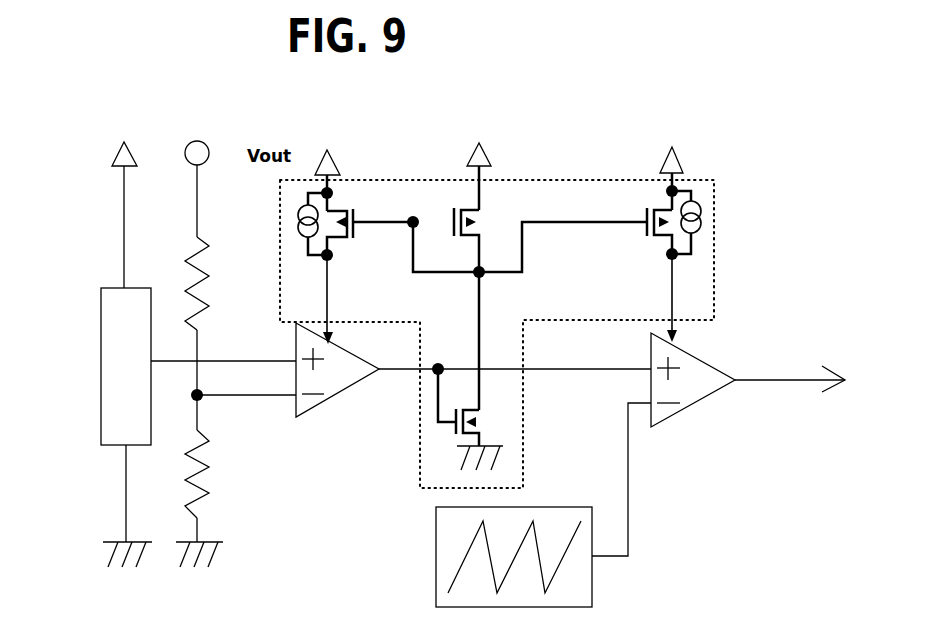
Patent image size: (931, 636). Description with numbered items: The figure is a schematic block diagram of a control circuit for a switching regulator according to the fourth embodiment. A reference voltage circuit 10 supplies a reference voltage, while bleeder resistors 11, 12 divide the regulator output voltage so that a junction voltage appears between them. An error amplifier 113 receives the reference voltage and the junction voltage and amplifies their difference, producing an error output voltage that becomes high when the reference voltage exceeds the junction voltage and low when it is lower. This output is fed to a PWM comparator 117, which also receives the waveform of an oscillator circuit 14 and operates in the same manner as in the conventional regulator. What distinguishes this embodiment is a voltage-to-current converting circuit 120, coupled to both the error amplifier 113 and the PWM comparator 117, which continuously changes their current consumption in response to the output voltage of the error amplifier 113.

The reference voltage circuit 10 is at (102, 277).
The bleeder resistor 11 is at (210, 287).
The bleeder resistor 12 is at (213, 480).
The error amplifier 113 is at (330, 407).
The PWM comparator 117 is at (697, 402).
The voltage-to-current converting circuit 120 is at (522, 410).
The oscillator circuit 14 is at (580, 581).